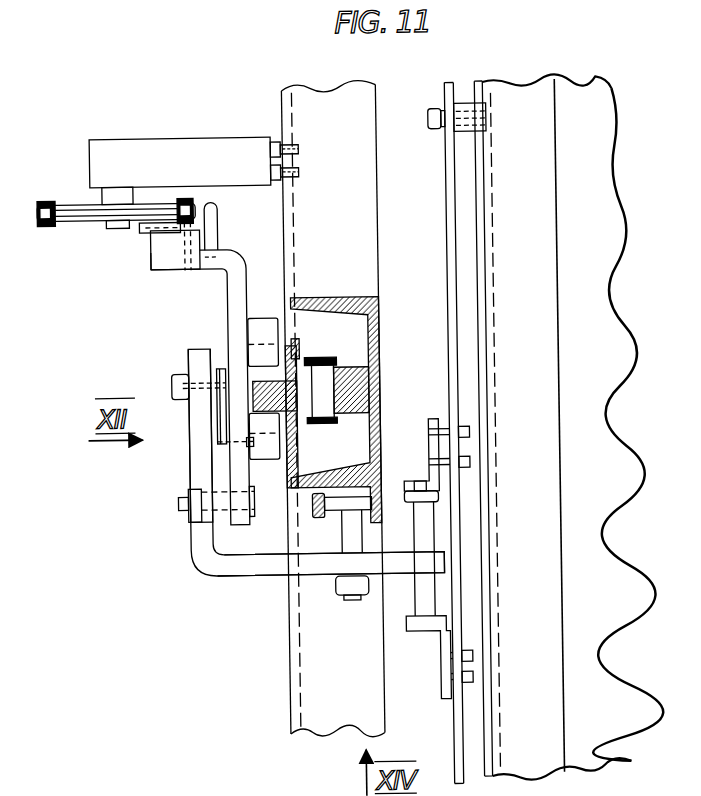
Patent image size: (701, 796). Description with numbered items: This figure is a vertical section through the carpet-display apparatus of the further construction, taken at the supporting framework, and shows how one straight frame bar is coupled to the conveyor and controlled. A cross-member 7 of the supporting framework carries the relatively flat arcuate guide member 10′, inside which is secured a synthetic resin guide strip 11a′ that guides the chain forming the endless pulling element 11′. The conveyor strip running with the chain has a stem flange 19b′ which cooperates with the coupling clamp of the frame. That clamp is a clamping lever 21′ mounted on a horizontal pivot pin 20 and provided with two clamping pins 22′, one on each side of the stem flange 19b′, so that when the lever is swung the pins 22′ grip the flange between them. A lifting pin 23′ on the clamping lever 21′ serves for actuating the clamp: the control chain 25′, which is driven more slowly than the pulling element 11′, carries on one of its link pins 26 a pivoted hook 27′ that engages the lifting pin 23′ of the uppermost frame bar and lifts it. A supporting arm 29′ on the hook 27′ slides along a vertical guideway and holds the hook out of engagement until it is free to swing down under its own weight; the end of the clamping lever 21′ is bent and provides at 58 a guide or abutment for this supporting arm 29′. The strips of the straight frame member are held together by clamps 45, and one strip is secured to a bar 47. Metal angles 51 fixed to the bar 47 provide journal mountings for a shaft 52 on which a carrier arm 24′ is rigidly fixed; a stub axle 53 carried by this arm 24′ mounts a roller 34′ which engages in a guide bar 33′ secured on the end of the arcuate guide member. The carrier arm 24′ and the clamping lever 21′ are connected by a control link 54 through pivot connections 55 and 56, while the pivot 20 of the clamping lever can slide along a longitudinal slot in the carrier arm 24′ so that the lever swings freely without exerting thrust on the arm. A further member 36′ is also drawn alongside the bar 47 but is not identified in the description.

The cross-member 7 is at (284, 662).
The arcuate guide member 10′ is at (322, 297).
The stem flange 19b′ is at (302, 356).
The synthetic resin guide strip 11a′ is at (369, 370).
The endless pulling element 11′ is at (321, 426).
The clamping pins 22′ is at (258, 317).
The clamping lever 21′ is at (229, 332).
The lifting pin 23′ is at (221, 224).
The supporting arm 29′ is at (207, 238).
The pivoted hook 27′ is at (178, 247).
The link pin 26 is at (205, 256).
The guide or abutment 58 is at (200, 270).
The control chain 25′ is at (192, 198).
The pivot pin 20 is at (206, 518).
The pivot connection 55 is at (205, 383).
The control link 54 is at (224, 408).
The pivot connection 56 is at (200, 481).
The carrier arm 24′ is at (242, 562).
The roller 34′ is at (318, 512).
The guide bar 33′ is at (384, 483).
The stub axle 53 is at (333, 562).
The shaft 52 is at (420, 590).
The metal angles 51 is at (437, 493).
The bar 47 is at (452, 220).
The rail 36′ is at (519, 78).
The clamps 45 is at (592, 105).